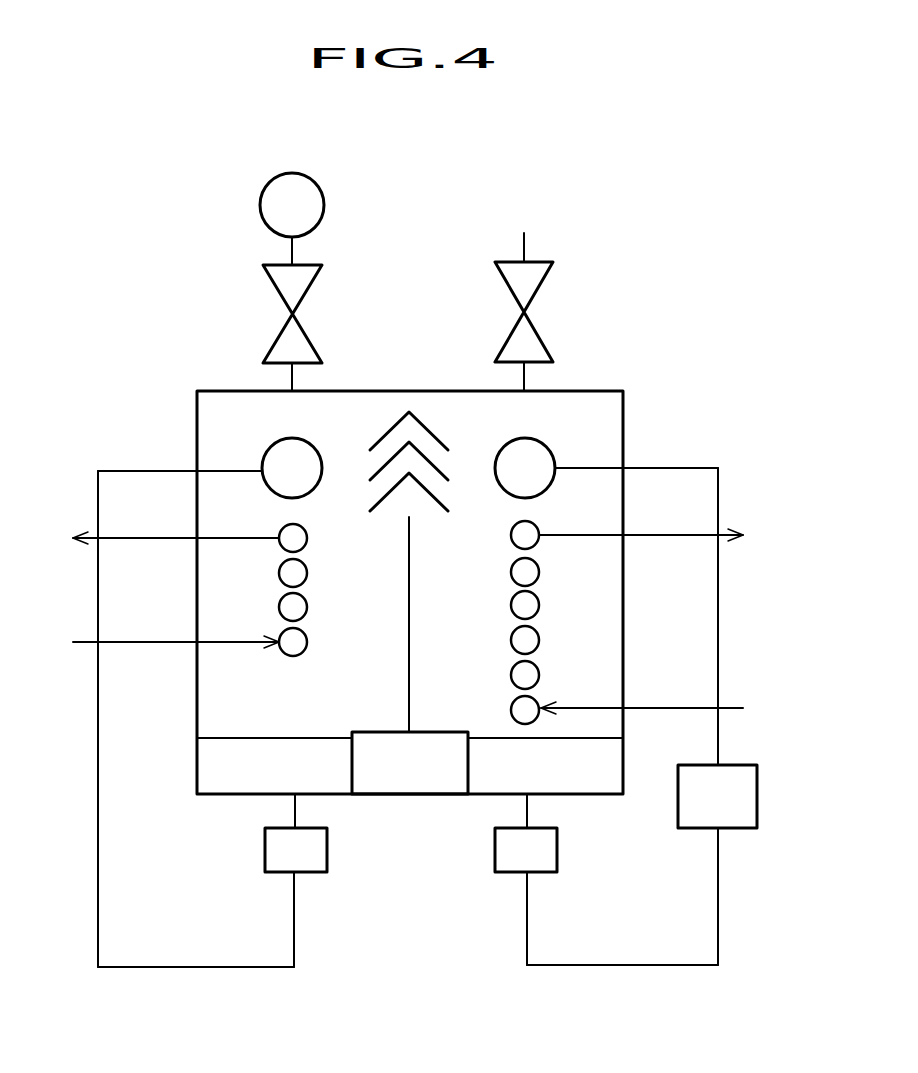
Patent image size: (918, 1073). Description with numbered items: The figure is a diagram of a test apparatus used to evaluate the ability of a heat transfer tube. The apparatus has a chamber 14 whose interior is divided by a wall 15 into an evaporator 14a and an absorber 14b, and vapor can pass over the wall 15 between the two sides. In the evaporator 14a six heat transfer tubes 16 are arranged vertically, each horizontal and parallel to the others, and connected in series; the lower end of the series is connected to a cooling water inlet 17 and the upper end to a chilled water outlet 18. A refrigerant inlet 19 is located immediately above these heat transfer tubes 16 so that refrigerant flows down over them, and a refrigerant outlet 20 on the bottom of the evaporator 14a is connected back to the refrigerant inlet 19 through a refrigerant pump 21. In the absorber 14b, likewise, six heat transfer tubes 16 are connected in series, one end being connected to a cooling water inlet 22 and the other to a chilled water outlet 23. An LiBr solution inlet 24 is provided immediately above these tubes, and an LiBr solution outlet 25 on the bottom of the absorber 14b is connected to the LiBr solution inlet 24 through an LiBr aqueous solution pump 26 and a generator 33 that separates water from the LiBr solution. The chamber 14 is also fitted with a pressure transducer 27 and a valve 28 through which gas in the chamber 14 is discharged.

The chamber 14 is at (625, 606).
The evaporator 14a is at (363, 412).
The absorber 14b is at (468, 415).
The wall 15 is at (411, 668).
The heat transfer tubes 16 is at (307, 540).
The cooling water inlet 17 is at (153, 642).
The chilled water outlet 18 is at (153, 538).
The refrigerant inlet 19 is at (262, 453).
The refrigerant outlet 20 is at (297, 809).
The refrigerant pump 21 is at (328, 852).
The cooling water inlet 22 is at (672, 707).
The chilled water outlet 23 is at (685, 535).
The LiBr solution inlet 24 is at (548, 442).
The LiBr solution outlet 25 is at (524, 810).
The LiBr aqueous solution pump 26 is at (494, 852).
The pressure transducer 27 is at (325, 202).
The valve 28 is at (318, 282).
The generator 33 is at (758, 797).